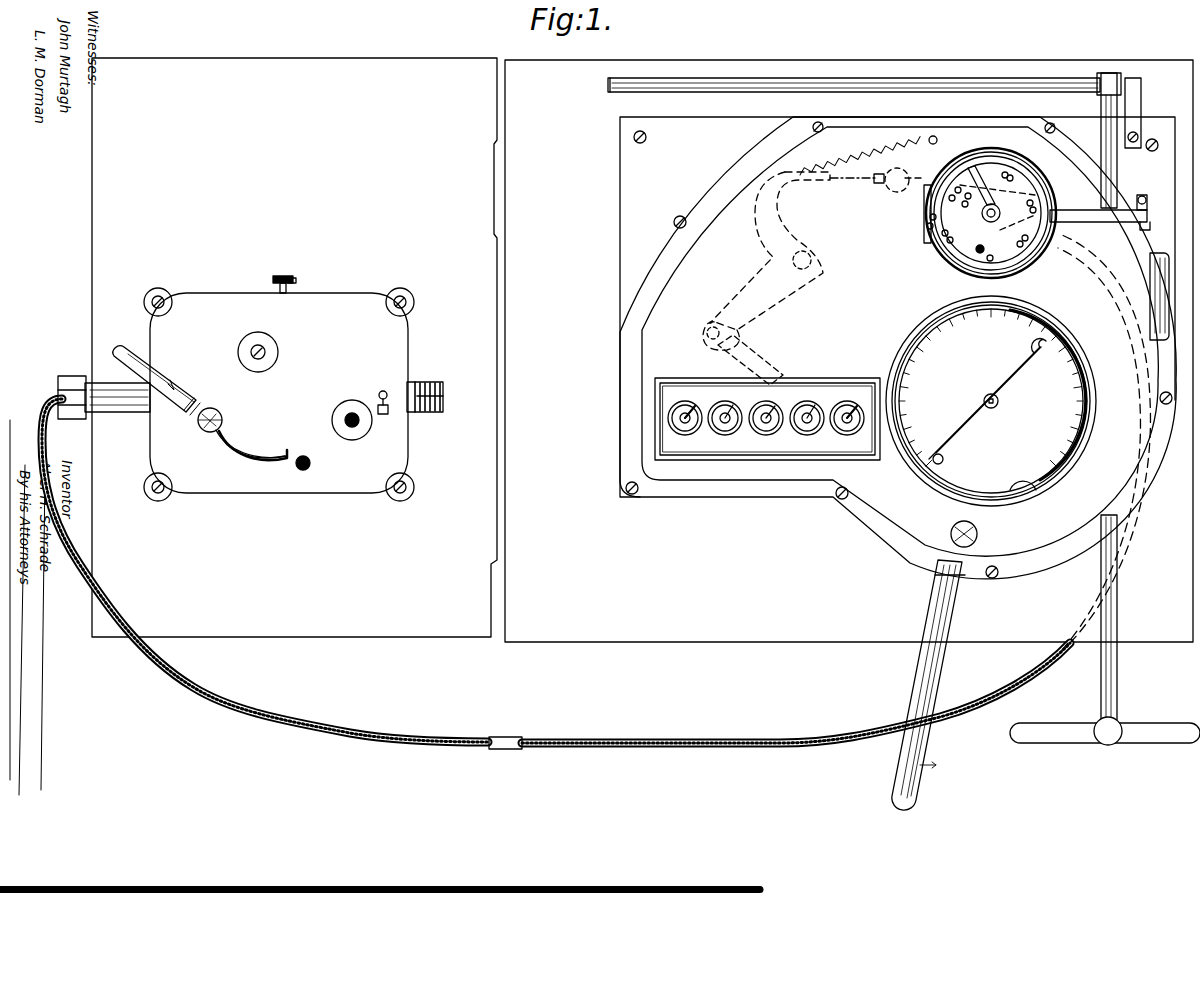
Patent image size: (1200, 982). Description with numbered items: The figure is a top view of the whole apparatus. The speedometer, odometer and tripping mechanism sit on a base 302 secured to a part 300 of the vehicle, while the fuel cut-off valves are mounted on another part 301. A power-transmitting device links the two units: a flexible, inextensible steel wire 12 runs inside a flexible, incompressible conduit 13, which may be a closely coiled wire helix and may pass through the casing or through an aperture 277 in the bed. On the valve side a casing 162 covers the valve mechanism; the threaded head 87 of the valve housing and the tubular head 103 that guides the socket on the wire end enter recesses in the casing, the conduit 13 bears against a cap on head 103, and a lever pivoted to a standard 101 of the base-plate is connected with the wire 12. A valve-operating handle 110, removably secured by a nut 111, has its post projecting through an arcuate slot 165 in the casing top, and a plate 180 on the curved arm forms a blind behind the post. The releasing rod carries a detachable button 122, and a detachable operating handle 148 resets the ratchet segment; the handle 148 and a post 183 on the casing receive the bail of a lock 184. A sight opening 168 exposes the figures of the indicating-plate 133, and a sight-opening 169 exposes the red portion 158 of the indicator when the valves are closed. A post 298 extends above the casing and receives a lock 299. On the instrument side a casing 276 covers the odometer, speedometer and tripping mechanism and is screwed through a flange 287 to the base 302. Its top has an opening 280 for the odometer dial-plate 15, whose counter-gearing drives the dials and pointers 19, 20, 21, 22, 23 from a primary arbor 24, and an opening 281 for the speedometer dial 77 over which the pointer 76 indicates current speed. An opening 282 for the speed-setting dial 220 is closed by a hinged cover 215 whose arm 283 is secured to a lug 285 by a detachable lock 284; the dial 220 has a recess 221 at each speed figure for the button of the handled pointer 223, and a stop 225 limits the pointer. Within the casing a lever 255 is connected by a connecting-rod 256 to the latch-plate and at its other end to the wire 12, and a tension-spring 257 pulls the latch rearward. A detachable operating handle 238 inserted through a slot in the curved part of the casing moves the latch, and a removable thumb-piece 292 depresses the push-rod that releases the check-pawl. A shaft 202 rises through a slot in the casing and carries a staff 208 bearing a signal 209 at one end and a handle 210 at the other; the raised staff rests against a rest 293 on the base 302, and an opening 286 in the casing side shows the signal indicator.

The steel wire 12 is at (492, 740).
The conduit 13 is at (275, 735).
The dial-plate 15 is at (690, 403).
The dial and pointer 19 is at (852, 434).
The dial and pointer 20 is at (812, 434).
The dial and pointer 21 is at (771, 434).
The dial and pointer 22 is at (730, 434).
The dial and pointer 23 is at (690, 434).
The primary arbor 24 is at (856, 404).
The pointer 76 is at (958, 410).
The dial 77 is at (1075, 405).
The tubular threaded head 87 is at (420, 382).
The standard 101 is at (72, 380).
The tubular head 103 is at (110, 415).
The valve-operating handle 110 is at (175, 385).
The nut 111 is at (222, 417).
The button 122 is at (311, 464).
The indicating-plate 133 is at (255, 352).
The operating handle 148 is at (280, 285).
The red portion 158 is at (336, 420).
The casing 162 is at (348, 308).
The arcuate slot 165 is at (238, 460).
The sight opening 168 is at (266, 350).
The sight-opening 169 is at (362, 432).
The plate 180 is at (258, 455).
The post 183 is at (292, 278).
The lock 184 is at (278, 276).
The shaft 202 is at (1125, 673).
The staff 208 is at (905, 78).
The signal 209 is at (775, 78).
The handle 210 is at (1154, 736).
The cover 215 is at (1050, 245).
The dial 220 is at (1030, 258).
The recess 221 is at (1040, 183).
The handled pointer 223 is at (985, 190).
The stop 225 is at (945, 255).
The operating handle 238 is at (920, 668).
The lever 255 is at (760, 285).
The connecting-rod 256 is at (765, 358).
The tension-spring 257 is at (876, 157).
The casing 276 is at (640, 328).
The aperture 277 is at (924, 200).
The opening 280 is at (850, 380).
The opening 281 is at (1025, 505).
The opening 282 is at (930, 235).
The arm 283 is at (1095, 210).
The lock 284 is at (1142, 195).
The lug 285 is at (1125, 224).
The opening 286 is at (1158, 305).
The flange 287 is at (673, 222).
The thumb-piece 292 is at (978, 535).
The rest 293 is at (1142, 100).
The post 298 is at (383, 391).
The lock 299 is at (388, 414).
The part of the vehicle 300 is at (569, 626).
The part of the vehicle 301 is at (357, 620).
The base 302 is at (620, 168).